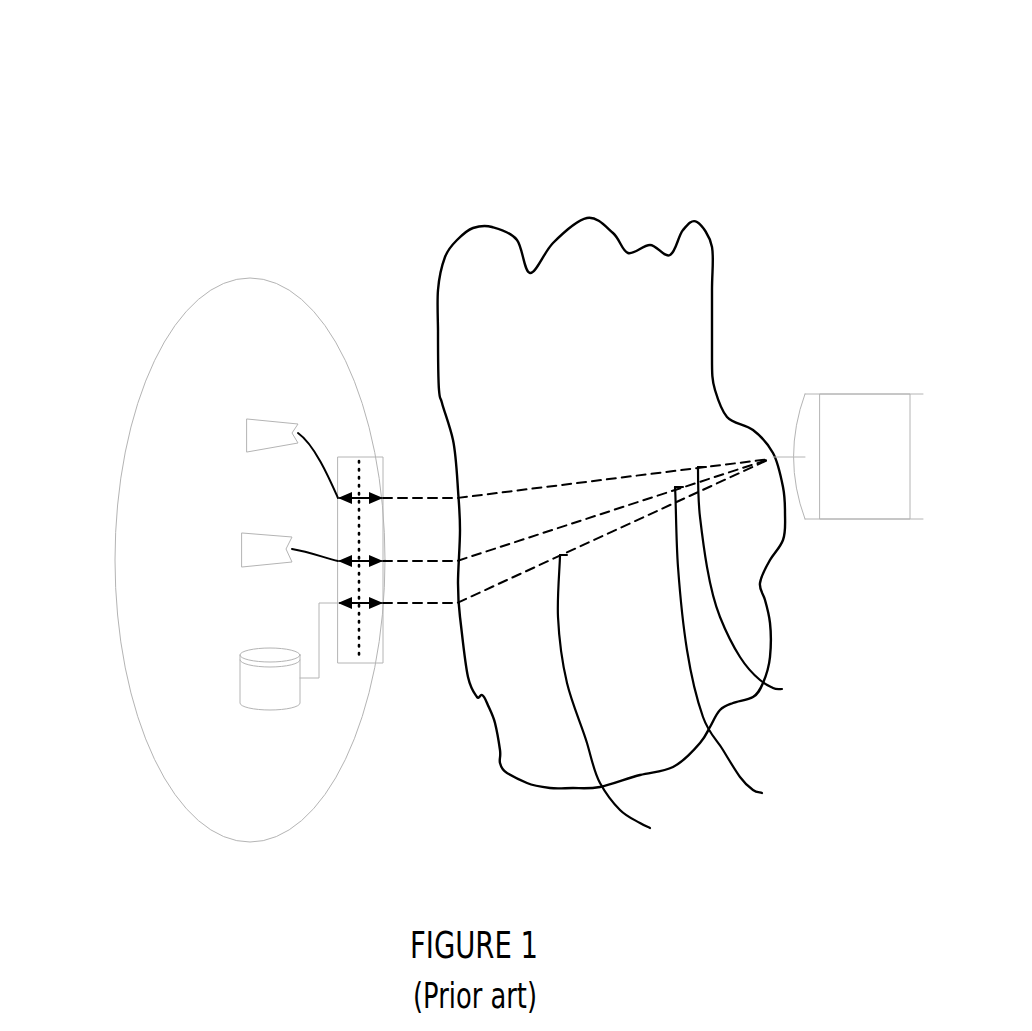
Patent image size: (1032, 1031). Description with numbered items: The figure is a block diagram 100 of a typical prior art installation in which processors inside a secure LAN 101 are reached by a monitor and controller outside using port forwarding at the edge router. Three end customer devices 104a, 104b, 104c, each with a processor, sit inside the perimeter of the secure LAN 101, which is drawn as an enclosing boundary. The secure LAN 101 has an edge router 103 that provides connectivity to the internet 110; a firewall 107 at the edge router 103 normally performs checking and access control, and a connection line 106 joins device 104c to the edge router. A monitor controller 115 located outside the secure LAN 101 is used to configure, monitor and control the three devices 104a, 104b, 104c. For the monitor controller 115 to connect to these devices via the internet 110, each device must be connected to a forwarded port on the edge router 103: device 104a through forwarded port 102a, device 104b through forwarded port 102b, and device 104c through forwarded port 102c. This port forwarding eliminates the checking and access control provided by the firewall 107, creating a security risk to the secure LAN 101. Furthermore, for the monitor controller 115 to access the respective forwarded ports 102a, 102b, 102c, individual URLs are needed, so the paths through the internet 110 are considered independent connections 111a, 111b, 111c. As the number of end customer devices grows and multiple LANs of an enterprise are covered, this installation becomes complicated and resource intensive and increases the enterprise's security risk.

The block diagram 100 is at (517, 155).
The secure LAN 101 is at (213, 290).
The edge router 103 is at (345, 458).
The firewall 107 is at (358, 612).
The forwarded port 102a is at (375, 562).
The forwarded port 102b is at (345, 502).
The forwarded port 102c is at (372, 606).
The end customer device 104a is at (242, 551).
The end customer device 104b is at (247, 434).
The end customer device 104c is at (243, 678).
The connection line 106 is at (319, 678).
The internet 110 is at (713, 300).
The independent connection 111a is at (741, 647).
The independent connection 111b is at (763, 585).
The independent connection 111c is at (627, 699).
The monitor controller 115 is at (865, 394).